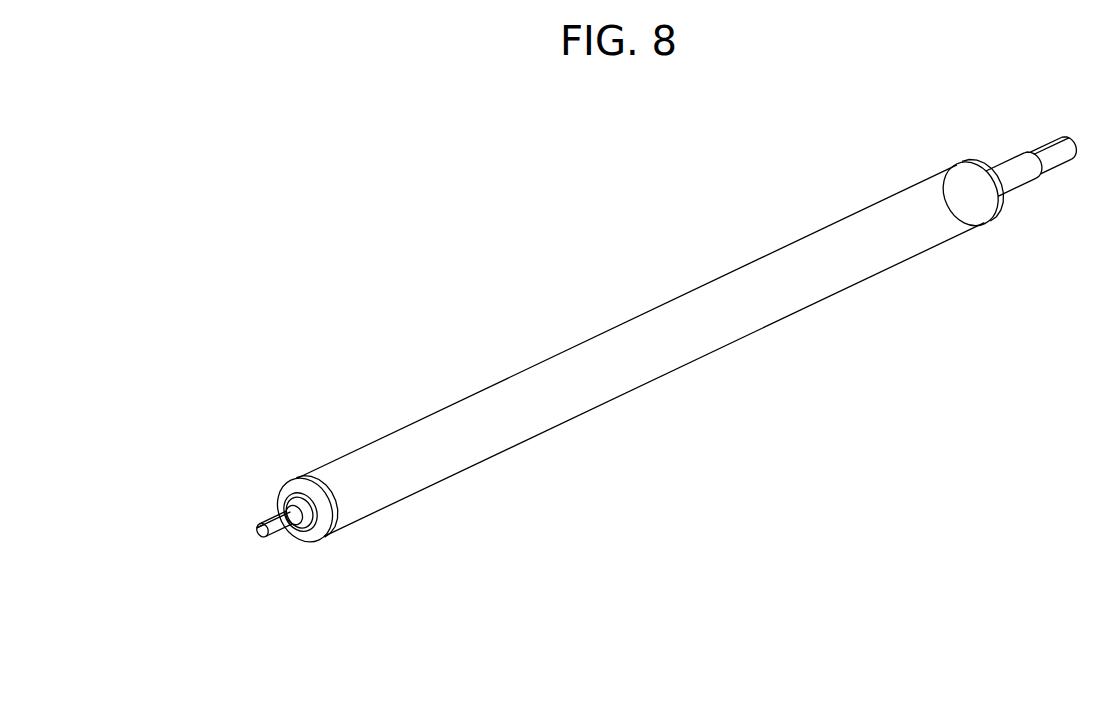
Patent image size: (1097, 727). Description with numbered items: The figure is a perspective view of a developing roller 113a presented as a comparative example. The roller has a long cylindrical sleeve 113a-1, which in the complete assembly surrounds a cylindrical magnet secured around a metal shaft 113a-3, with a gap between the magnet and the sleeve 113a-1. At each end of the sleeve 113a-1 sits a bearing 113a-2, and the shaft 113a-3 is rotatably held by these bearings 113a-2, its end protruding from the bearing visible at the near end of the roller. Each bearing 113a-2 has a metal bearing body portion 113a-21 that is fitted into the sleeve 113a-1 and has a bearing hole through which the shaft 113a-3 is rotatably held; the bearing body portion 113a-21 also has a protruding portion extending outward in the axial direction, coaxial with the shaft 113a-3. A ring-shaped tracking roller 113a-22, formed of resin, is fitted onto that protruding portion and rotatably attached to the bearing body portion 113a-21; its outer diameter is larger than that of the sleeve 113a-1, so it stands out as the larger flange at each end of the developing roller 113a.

The developing roller 113a is at (703, 226).
The sleeve 113a-1 is at (698, 349).
The bearing 113a-2 is at (457, 638).
The bearing body portion 113a-21 is at (305, 529).
The tracking roller 113a-22 is at (324, 531).
The shaft 113a-3 is at (270, 535).